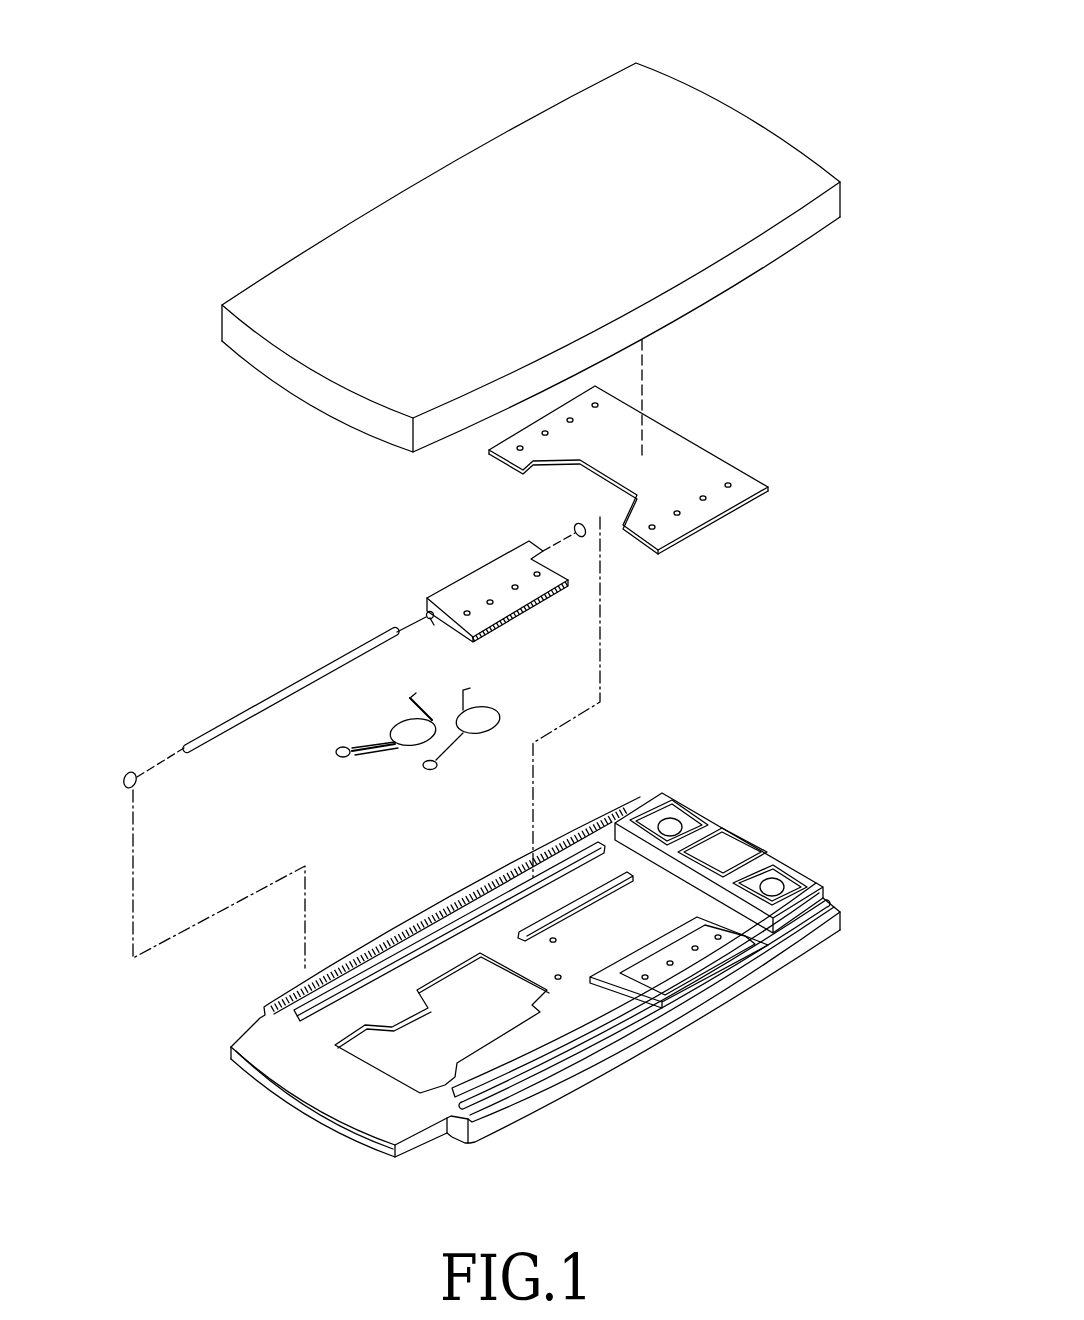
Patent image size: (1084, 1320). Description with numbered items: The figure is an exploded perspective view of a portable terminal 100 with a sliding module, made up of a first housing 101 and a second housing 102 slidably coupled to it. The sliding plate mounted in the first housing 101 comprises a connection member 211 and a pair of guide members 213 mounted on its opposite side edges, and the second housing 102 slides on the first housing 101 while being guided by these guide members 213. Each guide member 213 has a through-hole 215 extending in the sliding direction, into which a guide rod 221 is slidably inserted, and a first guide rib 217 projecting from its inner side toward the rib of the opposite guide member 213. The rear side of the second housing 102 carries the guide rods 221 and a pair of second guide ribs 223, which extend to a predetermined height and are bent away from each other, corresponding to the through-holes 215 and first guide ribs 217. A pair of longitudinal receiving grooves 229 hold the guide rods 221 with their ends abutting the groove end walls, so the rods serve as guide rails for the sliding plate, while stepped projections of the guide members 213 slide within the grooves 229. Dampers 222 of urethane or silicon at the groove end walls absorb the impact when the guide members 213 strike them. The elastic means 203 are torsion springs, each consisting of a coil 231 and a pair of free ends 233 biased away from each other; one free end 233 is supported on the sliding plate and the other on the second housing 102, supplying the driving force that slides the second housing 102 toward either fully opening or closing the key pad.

The portable terminal 100 is at (318, 18).
The first housing 101 is at (870, 182).
The second housing 102 is at (870, 930).
The elastic means 203 is at (457, 770).
The connection member 211 is at (733, 440).
The guide member 213 is at (455, 565).
The through-hole 215 is at (423, 613).
The first guide rib 217 is at (522, 608).
The guide rod 221 is at (270, 698).
The damper 222 is at (573, 522).
The second guide rib 223 is at (665, 930).
The receiving groove 229 is at (418, 947).
The coil 231 is at (390, 723).
The free end 233 is at (420, 703).